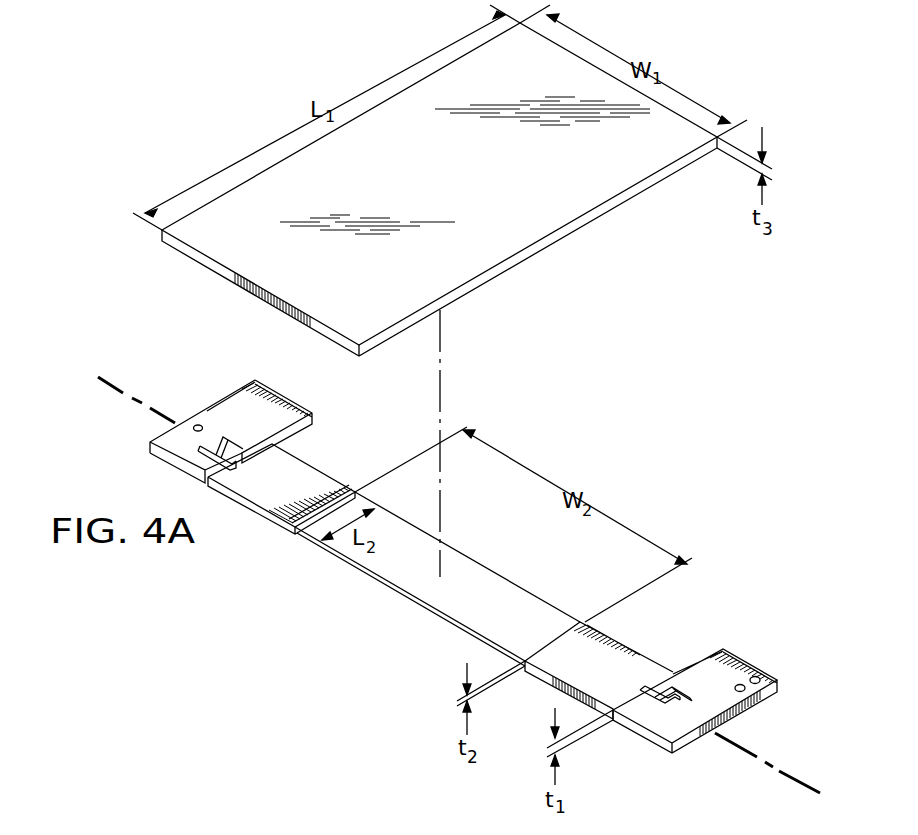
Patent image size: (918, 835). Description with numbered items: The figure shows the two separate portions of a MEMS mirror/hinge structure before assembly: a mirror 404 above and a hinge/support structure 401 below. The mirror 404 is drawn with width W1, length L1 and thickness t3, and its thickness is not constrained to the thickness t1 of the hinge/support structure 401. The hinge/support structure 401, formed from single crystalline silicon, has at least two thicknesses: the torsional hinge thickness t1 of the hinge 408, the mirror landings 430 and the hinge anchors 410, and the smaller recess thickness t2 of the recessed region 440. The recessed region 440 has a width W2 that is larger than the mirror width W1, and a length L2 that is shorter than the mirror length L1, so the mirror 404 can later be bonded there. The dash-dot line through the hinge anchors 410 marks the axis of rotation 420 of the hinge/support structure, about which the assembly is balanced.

The hinge/support structure 401 is at (179, 391).
The mirror 404 is at (583, 227).
The hinge 408 is at (642, 688).
The hinge anchors 410 is at (245, 388).
The axis of rotation 420 is at (115, 390).
The mirror landings 430 is at (318, 478).
The recessed region 440 is at (517, 595).